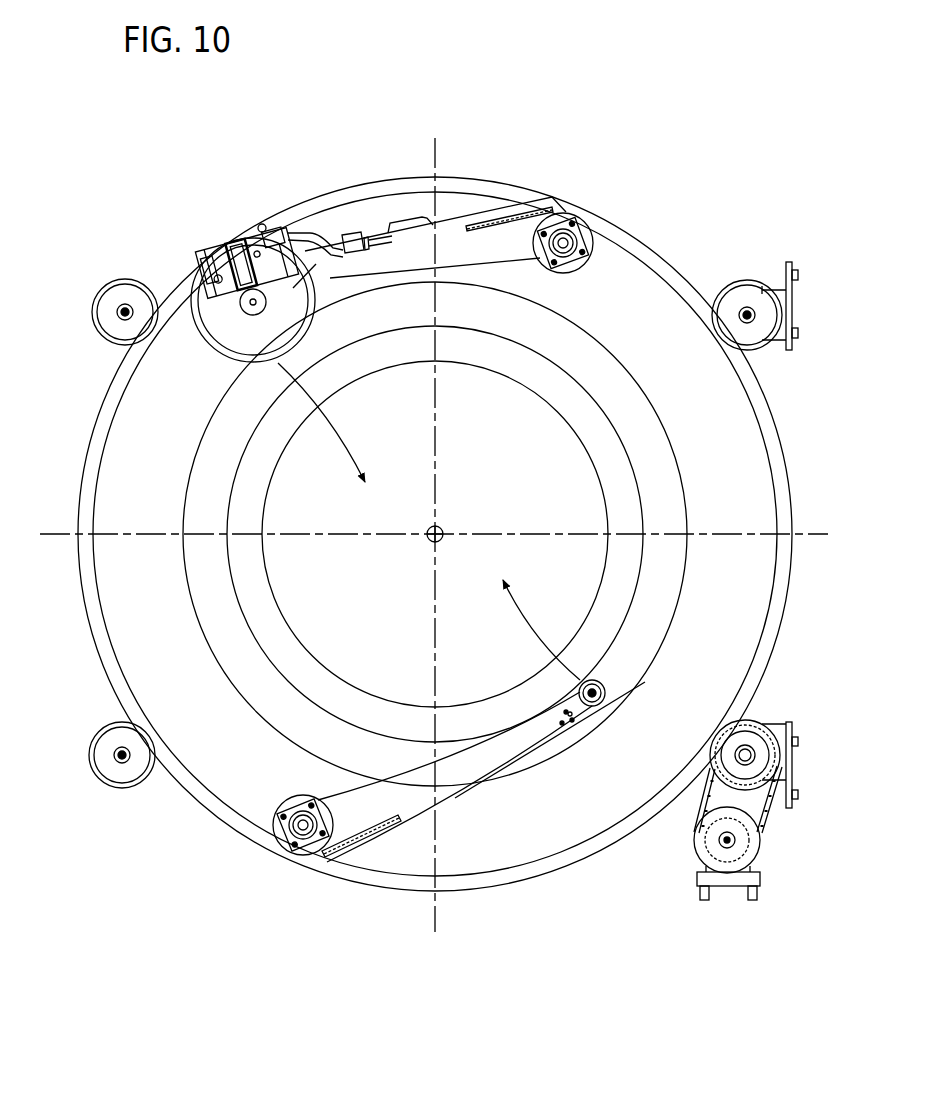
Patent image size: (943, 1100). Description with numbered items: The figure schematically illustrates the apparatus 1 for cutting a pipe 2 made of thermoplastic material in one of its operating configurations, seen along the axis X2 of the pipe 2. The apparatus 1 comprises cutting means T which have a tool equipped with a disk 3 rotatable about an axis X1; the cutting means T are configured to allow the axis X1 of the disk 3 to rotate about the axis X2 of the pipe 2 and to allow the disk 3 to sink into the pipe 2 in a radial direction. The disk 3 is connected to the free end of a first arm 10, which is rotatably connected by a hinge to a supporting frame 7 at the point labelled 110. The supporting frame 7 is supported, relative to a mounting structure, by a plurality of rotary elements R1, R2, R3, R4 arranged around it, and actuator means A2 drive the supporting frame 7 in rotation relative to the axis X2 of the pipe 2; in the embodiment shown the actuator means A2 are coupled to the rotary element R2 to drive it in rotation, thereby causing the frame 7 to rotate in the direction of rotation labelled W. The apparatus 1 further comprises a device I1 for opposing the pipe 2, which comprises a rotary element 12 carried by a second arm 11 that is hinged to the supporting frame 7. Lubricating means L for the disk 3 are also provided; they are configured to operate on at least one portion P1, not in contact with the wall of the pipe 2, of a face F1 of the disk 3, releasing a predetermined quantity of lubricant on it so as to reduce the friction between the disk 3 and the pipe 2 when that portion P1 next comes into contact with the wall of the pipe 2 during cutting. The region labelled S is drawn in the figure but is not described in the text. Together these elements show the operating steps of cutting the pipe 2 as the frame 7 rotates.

The apparatus 1 is at (579, 190).
The pipe 2 is at (280, 682).
The disk 3 is at (210, 352).
The supporting frame 7 is at (694, 292).
The first arm 10 is at (461, 207).
The second arm 11 is at (410, 830).
The rotary element 12 is at (613, 699).
The hinge point 110 is at (581, 228).
The station ring S is at (555, 355).
The cutting means T is at (286, 233).
The direction of rotation W is at (592, 108).
The axis X1 is at (260, 225).
The axis of the pipe X2 is at (440, 528).
The portion P1 is at (223, 246).
The first face F1 is at (316, 264).
The device for opposing the pipe I1 is at (460, 800).
The lubricating means L is at (196, 262).
The rotary element R1 is at (751, 280).
The rotary element R2 is at (768, 722).
The rotary element R3 is at (118, 792).
The rotary element R4 is at (95, 278).
The actuator means A2 is at (690, 856).